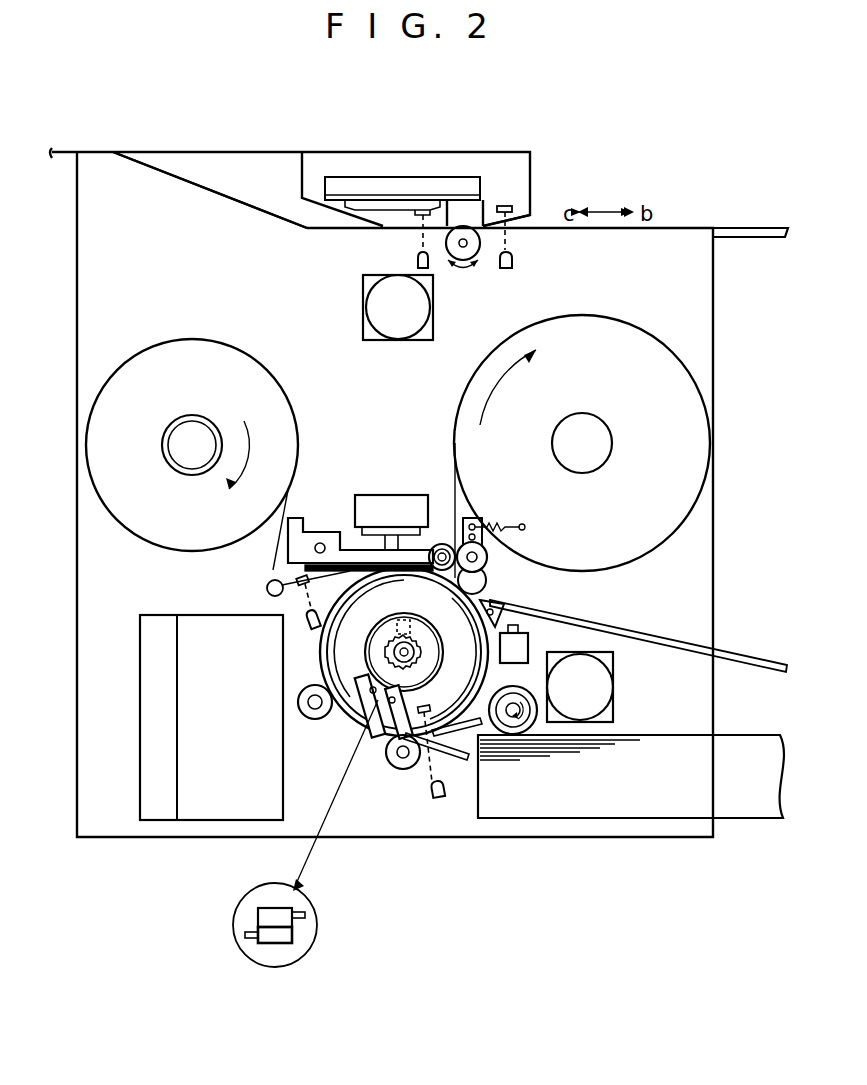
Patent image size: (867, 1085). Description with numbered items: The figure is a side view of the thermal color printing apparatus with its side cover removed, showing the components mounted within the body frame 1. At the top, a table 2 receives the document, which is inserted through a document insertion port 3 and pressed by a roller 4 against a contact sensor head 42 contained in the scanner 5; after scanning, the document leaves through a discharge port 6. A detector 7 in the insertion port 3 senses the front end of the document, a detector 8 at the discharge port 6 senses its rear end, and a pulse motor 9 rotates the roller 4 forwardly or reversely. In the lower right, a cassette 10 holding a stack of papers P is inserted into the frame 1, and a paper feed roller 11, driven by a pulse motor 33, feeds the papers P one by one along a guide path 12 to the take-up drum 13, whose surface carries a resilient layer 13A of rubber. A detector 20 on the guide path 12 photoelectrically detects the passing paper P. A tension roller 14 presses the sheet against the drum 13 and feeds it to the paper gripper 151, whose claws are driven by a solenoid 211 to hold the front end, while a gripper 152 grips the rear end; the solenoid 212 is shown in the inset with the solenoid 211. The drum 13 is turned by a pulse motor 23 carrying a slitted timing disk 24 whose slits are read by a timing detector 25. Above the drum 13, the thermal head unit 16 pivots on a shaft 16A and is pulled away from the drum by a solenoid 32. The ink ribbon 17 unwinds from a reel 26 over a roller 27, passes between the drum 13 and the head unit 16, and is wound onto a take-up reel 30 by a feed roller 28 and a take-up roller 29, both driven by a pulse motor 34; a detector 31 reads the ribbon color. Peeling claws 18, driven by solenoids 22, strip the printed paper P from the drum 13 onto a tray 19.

The body frame 1 is at (713, 306).
The table 2 is at (733, 226).
The document insertion port 3 is at (530, 223).
The roller 4 is at (468, 262).
The scanner 5 is at (432, 172).
The document discharge port 6 is at (333, 230).
The detector 7 is at (516, 244).
The detector 8 is at (415, 243).
The pulse motor 9 is at (400, 342).
The cassette 10 is at (752, 812).
The paper feed roller 11 is at (512, 688).
The guide path 12 is at (442, 757).
The take-up drum 13 is at (364, 652).
The resilient layer 13A is at (328, 648).
The tension roller 14 is at (400, 770).
The paper gripper 151 is at (380, 736).
The gripper 152 is at (348, 718).
The thermal head unit 16 is at (360, 515).
The shaft 16A is at (320, 542).
The ink ribbon 17 is at (271, 557).
The peeling claws 18 is at (487, 597).
The tray 19 is at (745, 655).
The detector 20 is at (430, 800).
The solenoid 211 is at (278, 913).
The detector element 212 is at (278, 935).
The solenoids 22 is at (523, 646).
The pulse motor 23 is at (383, 636).
The timing disk 24 is at (418, 645).
The timing detector 25 is at (405, 618).
The reel 26 is at (190, 438).
The roller 27 is at (267, 597).
The feed roller 28 is at (442, 543).
The take-up roller 29 is at (488, 560).
The take-up reel 30 is at (583, 425).
The detector 31 is at (291, 602).
The solenoid 32 is at (392, 500).
The pulse motor 33 is at (625, 687).
The pulse motor 34 is at (605, 686).
The contact sensor head 42 is at (483, 214).
The paper P is at (503, 762).